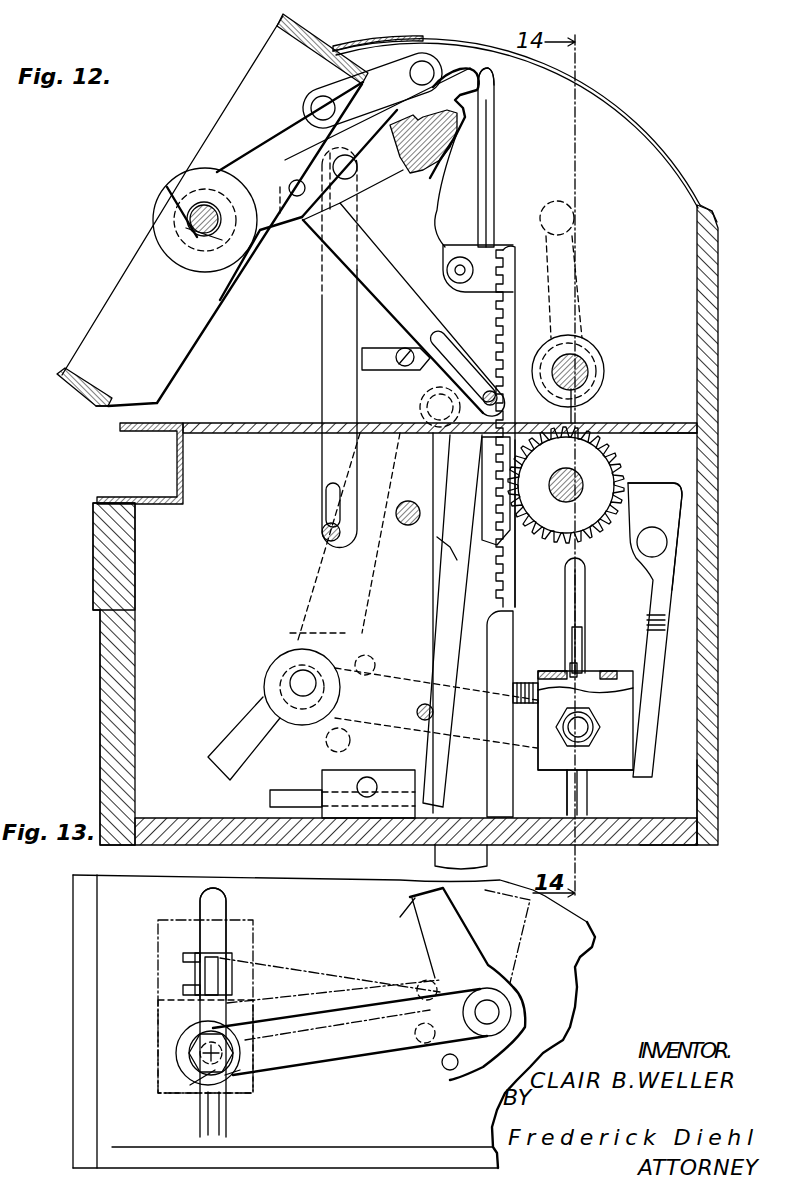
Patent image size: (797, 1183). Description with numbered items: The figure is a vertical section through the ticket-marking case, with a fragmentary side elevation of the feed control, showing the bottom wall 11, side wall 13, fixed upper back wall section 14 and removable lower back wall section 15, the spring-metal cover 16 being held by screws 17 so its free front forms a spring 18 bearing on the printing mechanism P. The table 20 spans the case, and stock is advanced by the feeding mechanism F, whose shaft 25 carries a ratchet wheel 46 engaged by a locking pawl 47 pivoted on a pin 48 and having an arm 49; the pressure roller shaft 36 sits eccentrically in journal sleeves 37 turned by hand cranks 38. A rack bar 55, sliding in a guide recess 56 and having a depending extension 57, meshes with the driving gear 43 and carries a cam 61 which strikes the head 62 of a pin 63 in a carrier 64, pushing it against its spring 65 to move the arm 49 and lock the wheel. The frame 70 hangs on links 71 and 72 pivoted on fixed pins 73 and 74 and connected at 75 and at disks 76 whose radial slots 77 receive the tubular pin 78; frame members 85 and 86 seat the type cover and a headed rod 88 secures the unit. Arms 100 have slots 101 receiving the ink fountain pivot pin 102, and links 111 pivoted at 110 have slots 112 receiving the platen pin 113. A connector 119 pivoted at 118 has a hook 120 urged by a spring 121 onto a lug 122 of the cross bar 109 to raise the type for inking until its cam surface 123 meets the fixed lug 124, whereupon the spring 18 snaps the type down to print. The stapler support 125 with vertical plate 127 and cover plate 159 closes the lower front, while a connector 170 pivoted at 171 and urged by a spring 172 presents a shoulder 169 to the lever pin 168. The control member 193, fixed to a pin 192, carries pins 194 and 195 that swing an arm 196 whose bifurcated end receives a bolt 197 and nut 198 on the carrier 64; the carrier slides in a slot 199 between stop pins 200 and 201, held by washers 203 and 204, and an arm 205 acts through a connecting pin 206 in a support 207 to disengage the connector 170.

In FIG. 12, the bottom wall 11 is at (228, 827).
In FIG. 13, the bottom wall 11 is at (112, 1150).
In FIG. 12, the side wall 13 is at (655, 172).
In FIG. 13, the side wall 13 is at (573, 953).
In FIG. 12, the fixed upper back wall section 14 is at (720, 296).
In FIG. 12, the removable lower back wall section 15 is at (712, 776).
In FIG. 13, the removable lower back wall section 15 is at (80, 975).
In FIG. 12, the cover 16 is at (627, 125).
In FIG. 12, the screws 17 is at (715, 210).
In FIG. 12, the spring 18 is at (432, 60).
In FIG. 12, the horizontal partition or table 20 is at (221, 423).
In FIG. 12, the shaft 25 is at (580, 482).
In FIG. 12, the shaft 36 is at (590, 372).
In FIG. 12, the journal sleeves 37 is at (578, 342).
In FIG. 12, the hand cranks 38 is at (579, 270).
In FIG. 12, the driving gear 43 is at (643, 427).
In FIG. 12, the ratchet wheel 46 is at (575, 567).
In FIG. 12, the locking pawl 47 is at (670, 503).
In FIG. 12, the pin 48 is at (667, 541).
In FIG. 12, the arm 49 is at (657, 642).
In FIG. 12, the rack bar 55 is at (497, 333).
In FIG. 12, the guide recess 56 is at (545, 222).
In FIG. 12, the depending extension 57 is at (461, 856).
In FIG. 12, the cam 61 is at (495, 523).
In FIG. 12, the head 62 is at (495, 770).
In FIG. 12, the pin 63 is at (640, 687).
In FIG. 12, the carrier 64 is at (613, 757).
In FIG. 13, the carrier 64 is at (155, 1032).
In FIG. 12, the spring 65 is at (527, 680).
In FIG. 12, the rectangular frame 70 is at (300, 27).
In FIG. 12, the links 71 is at (356, 46).
In FIG. 12, the links 72 is at (418, 60).
In FIG. 12, the fixed pins 73 is at (452, 58).
In FIG. 12, the fixed pins 74 is at (297, 197).
In FIG. 12, the pivotal connections 75 is at (311, 106).
In FIG. 12, the pivotal connections 76 is at (168, 223).
In FIG. 12, the radial slots 77 is at (200, 172).
In FIG. 12, the tubular pin 78 is at (193, 230).
In FIG. 12, the frame member 85 is at (284, 22).
In FIG. 12, the frame member 86 is at (72, 388).
In FIG. 12, the headed rod 88 is at (197, 238).
In FIG. 12, the arms 100 is at (404, 293).
In FIG. 12, the longitudinal slots 101 is at (447, 345).
In FIG. 12, the pivot pin 102 is at (462, 388).
In FIG. 12, the cross bar 109 is at (400, 175).
In FIG. 12, the pivotal connection 110 is at (323, 147).
In FIG. 12, the links 111 is at (333, 312).
In FIG. 12, the longitudinal slots 112 is at (337, 500).
In FIG. 12, the pin 113 is at (343, 533).
In FIG. 12, the pivot 118 is at (455, 270).
In FIG. 12, the connector 119 is at (470, 190).
In FIG. 12, the hook 120 is at (468, 55).
In FIG. 12, the spring 121 is at (497, 140).
In FIG. 12, the lug 122 is at (458, 115).
In FIG. 12, the cam surface 123 is at (424, 238).
In FIG. 12, the fixed lug 124 is at (353, 355).
In FIG. 12, the L-shaped support 125 is at (90, 671).
In FIG. 12, the vertical plate 127 is at (107, 712).
In FIG. 12, the cover plate 159 is at (95, 537).
In FIG. 12, the pin 168 is at (420, 704).
In FIG. 12, the shoulder 169 is at (450, 545).
In FIG. 12, the connector 170 is at (475, 491).
In FIG. 12, the pivot 171 is at (456, 623).
In FIG. 12, the spring 172 is at (463, 513).
In FIG. 12, the pin 192 is at (293, 679).
In FIG. 13, the pin 192 is at (497, 1013).
In FIG. 12, the stock feed control member 193 is at (390, 462).
In FIG. 13, the stock feed control member 193 is at (413, 913).
In FIG. 12, the pin 194 is at (300, 636).
In FIG. 13, the pin 194 is at (418, 980).
In FIG. 12, the pin 195 is at (375, 748).
In FIG. 13, the pin 195 is at (450, 1080).
In FIG. 12, the arm 196 is at (436, 702).
In FIG. 13, the arm 196 is at (350, 1047).
In FIG. 12, the bolt 197 is at (590, 735).
In FIG. 13, the bolt 197 is at (211, 1053).
In FIG. 12, the nut 198 is at (600, 720).
In FIG. 12, the slot 199 is at (580, 587).
In FIG. 13, the slot 199 is at (220, 936).
In FIG. 12, the stop pin 200 is at (582, 650).
In FIG. 13, the stop pin 200 is at (195, 973).
In FIG. 12, the stop pin 201 is at (580, 815).
In FIG. 13, the stop pin 201 is at (230, 1125).
In FIG. 13, the plain washer 203 is at (200, 1093).
In FIG. 13, the plain washer 204 is at (243, 1077).
In FIG. 12, the arm 205 is at (240, 727).
In FIG. 12, the connecting pin 206 is at (270, 798).
In FIG. 12, the support 207 is at (342, 823).
In FIG. 12, the printing mechanism P is at (59, 362).
In FIG. 12, the feeding mechanism F is at (634, 464).